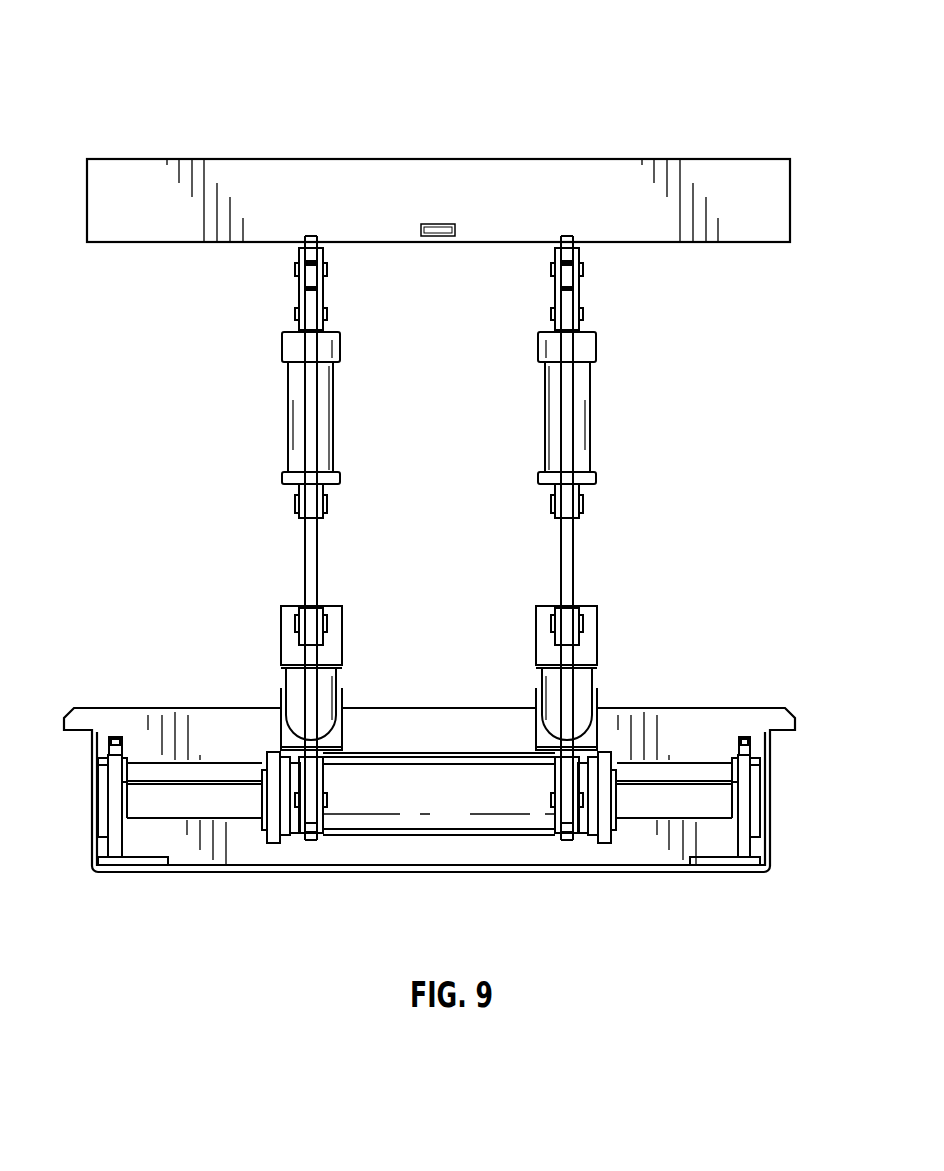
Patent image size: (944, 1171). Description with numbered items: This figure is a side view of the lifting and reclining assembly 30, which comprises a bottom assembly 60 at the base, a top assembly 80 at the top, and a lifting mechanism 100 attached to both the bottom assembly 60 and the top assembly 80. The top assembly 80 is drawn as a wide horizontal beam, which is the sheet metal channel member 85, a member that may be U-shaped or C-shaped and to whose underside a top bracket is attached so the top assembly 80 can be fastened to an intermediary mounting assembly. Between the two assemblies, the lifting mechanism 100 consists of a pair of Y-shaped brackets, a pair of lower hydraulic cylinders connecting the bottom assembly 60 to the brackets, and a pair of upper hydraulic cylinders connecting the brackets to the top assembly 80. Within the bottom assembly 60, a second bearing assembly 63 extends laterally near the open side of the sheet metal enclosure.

The lifting and reclining assembly 30 is at (446, 66).
The top assembly 80 is at (565, 156).
The sheet metal channel member 85 is at (790, 205).
The lifting mechanism 100 is at (258, 412).
The bottom assembly 60 is at (636, 876).
The second bearing assembly 63 is at (484, 805).